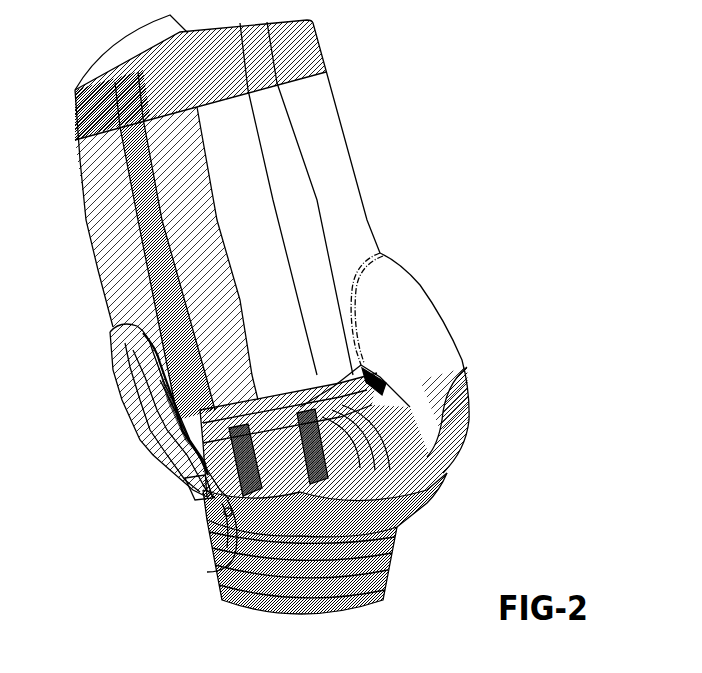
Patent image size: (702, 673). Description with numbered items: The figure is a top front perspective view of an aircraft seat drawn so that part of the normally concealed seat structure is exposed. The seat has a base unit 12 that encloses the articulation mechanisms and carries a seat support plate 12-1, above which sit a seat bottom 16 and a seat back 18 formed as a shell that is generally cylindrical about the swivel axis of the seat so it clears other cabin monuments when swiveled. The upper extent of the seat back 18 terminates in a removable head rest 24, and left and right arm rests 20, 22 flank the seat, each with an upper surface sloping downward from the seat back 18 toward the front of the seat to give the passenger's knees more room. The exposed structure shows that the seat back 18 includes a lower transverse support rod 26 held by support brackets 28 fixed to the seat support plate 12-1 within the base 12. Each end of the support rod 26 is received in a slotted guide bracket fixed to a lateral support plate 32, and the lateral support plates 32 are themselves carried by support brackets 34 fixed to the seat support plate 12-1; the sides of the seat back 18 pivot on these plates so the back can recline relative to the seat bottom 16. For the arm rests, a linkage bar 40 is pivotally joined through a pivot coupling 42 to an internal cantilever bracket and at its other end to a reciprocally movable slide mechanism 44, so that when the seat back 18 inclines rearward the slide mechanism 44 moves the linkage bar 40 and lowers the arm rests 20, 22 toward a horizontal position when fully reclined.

The base unit 12 is at (310, 593).
The seat support plate 12-1 is at (297, 540).
The seat bottom 16 is at (432, 455).
The seat back 18 is at (238, 248).
The left arm rest 20 is at (390, 290).
The right arm rest 22 is at (137, 400).
The removable head rest 24 is at (207, 79).
The lower transverse support rod 26 is at (268, 420).
The support brackets 28 is at (245, 413).
The lateral support plate 32 is at (190, 490).
The support brackets 34 is at (233, 560).
The linkage bar 40 is at (190, 450).
The pivot coupling 42 is at (213, 510).
The slide mechanism 44 is at (141, 363).